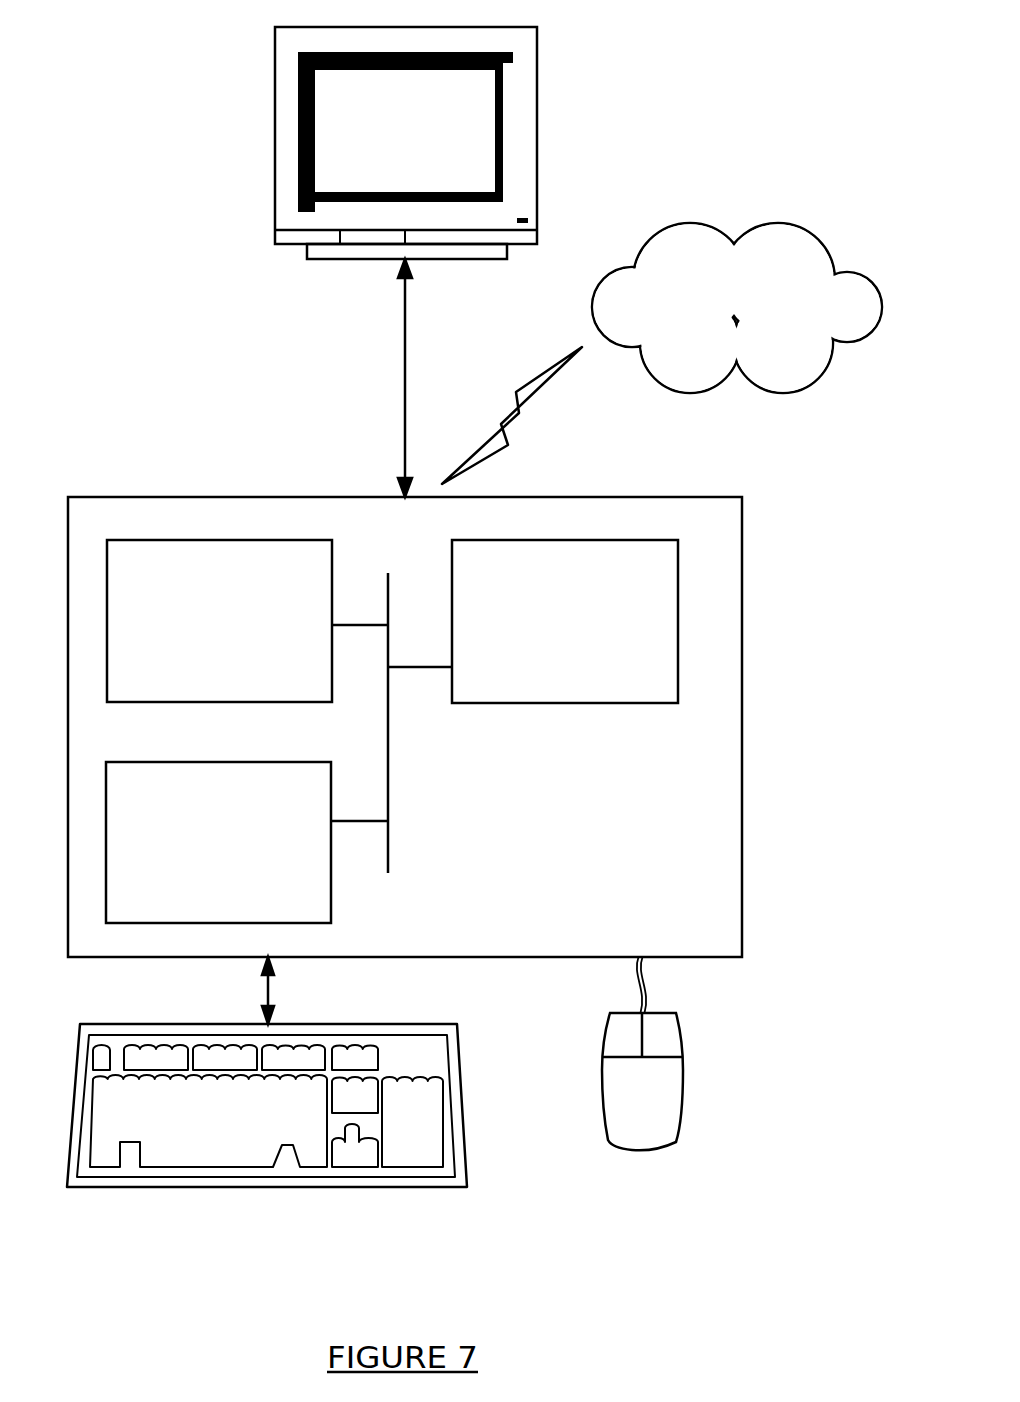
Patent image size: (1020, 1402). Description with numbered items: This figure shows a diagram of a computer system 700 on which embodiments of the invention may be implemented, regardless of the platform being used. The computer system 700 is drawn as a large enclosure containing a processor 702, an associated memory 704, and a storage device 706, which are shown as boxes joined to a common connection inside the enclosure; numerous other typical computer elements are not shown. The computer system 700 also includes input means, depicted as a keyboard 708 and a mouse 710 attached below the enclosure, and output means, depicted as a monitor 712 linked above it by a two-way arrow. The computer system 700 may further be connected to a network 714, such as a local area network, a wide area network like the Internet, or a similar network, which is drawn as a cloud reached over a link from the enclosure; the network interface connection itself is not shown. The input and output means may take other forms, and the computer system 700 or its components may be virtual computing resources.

The computer system 700 is at (770, 722).
The processor 702 is at (547, 631).
The memory 704 is at (198, 631).
The storage device 706 is at (194, 854).
The keyboard 708 is at (220, 1137).
The mouse 710 is at (623, 1101).
The monitor 712 is at (428, 137).
The network 714 is at (720, 307).